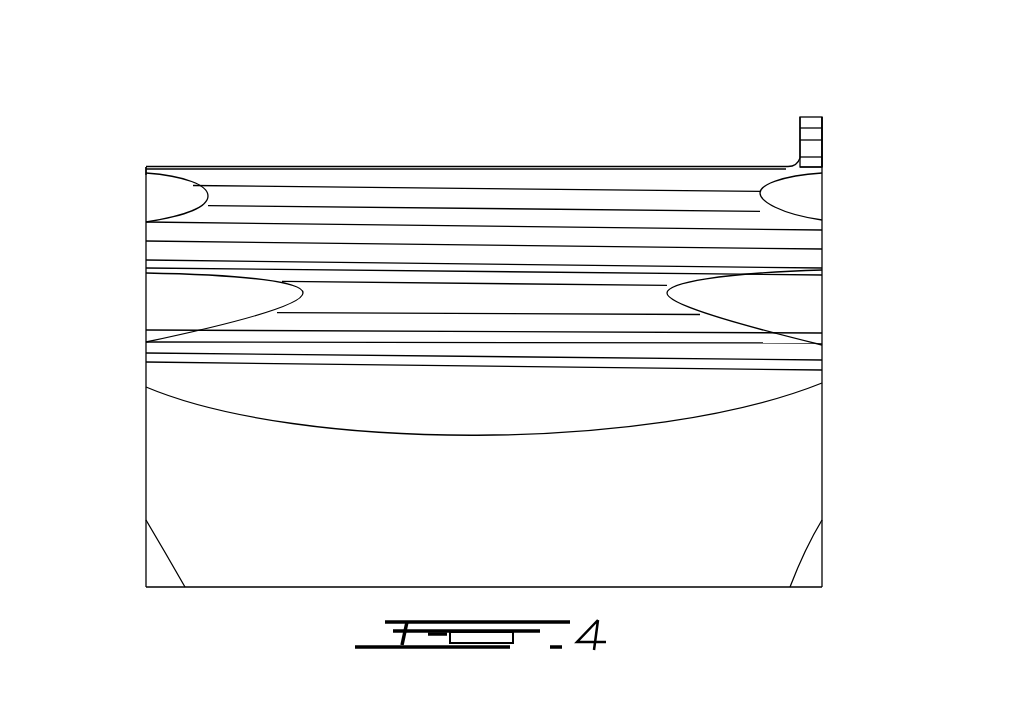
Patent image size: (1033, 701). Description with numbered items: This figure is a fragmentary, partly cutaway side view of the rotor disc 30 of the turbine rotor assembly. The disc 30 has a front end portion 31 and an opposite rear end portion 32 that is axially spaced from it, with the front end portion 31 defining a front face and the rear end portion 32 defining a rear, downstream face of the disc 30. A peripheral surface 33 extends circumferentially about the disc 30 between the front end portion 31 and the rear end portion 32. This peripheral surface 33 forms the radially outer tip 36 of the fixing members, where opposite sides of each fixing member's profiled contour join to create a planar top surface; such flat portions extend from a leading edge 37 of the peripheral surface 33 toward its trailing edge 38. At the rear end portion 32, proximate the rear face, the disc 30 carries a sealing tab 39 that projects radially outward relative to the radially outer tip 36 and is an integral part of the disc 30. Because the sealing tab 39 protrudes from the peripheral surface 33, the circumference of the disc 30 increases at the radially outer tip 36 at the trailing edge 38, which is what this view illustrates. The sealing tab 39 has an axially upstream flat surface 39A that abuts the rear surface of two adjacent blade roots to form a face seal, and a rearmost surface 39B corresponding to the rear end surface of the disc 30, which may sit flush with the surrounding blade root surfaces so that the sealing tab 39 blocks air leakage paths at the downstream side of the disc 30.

The rotor disc 30 is at (131, 107).
The front end portion 31 is at (127, 346).
The rear end portion 32 is at (841, 348).
The peripheral surface 33 is at (441, 157).
The radially outer tip 36 is at (223, 157).
The leading edge 37 is at (146, 168).
The trailing edge 38 is at (823, 158).
The sealing tab 39 is at (823, 122).
The upstream flat surface 39A is at (798, 134).
The rearmost surface 39B is at (826, 133).